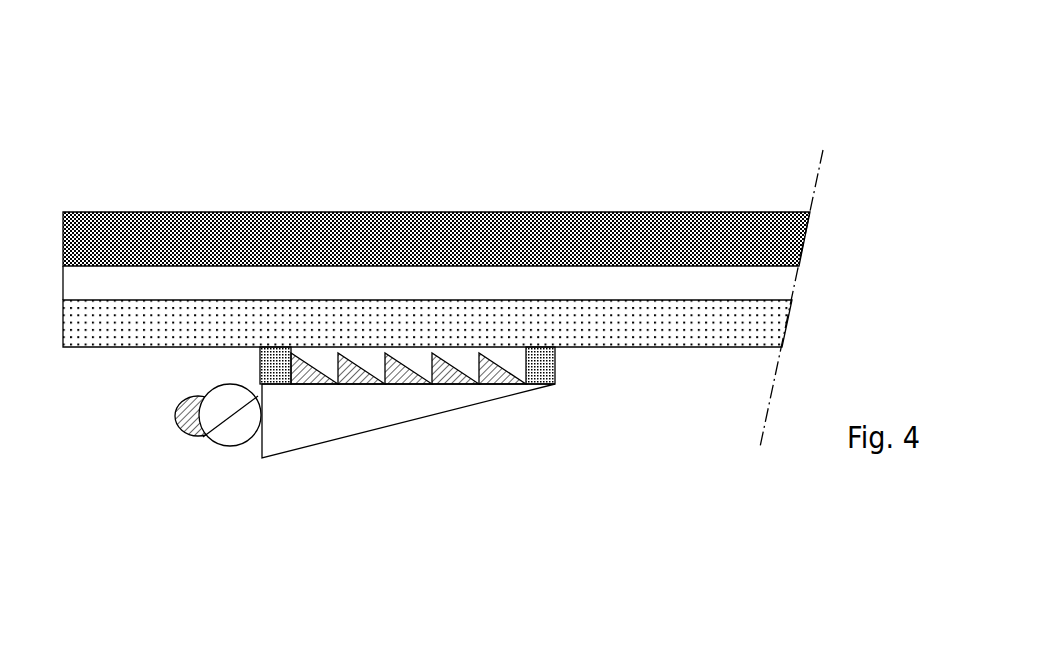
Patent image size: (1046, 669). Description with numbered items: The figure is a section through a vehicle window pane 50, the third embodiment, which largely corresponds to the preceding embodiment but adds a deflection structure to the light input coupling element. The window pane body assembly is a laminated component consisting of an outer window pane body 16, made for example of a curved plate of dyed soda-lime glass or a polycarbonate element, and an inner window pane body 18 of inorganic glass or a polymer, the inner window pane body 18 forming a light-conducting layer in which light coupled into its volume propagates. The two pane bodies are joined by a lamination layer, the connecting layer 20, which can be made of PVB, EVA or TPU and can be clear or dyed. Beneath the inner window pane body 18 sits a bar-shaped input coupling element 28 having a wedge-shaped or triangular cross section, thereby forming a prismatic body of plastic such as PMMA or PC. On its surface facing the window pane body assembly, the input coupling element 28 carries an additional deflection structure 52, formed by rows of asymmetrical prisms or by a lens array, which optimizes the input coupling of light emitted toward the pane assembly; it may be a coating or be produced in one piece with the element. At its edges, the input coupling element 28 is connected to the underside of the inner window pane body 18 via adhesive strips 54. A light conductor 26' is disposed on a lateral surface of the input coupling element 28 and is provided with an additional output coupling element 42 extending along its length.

The outer window pane body 16 is at (118, 240).
The inner window pane body 18 is at (82, 322).
The connecting layer 20 is at (775, 272).
The light conductor 26' is at (246, 462).
The input coupling element 28 is at (348, 428).
The output coupling element 42 is at (176, 417).
The vehicle window pane 50 is at (753, 127).
The additional deflection structure 52 is at (446, 353).
The adhesive strips 54 is at (272, 358).